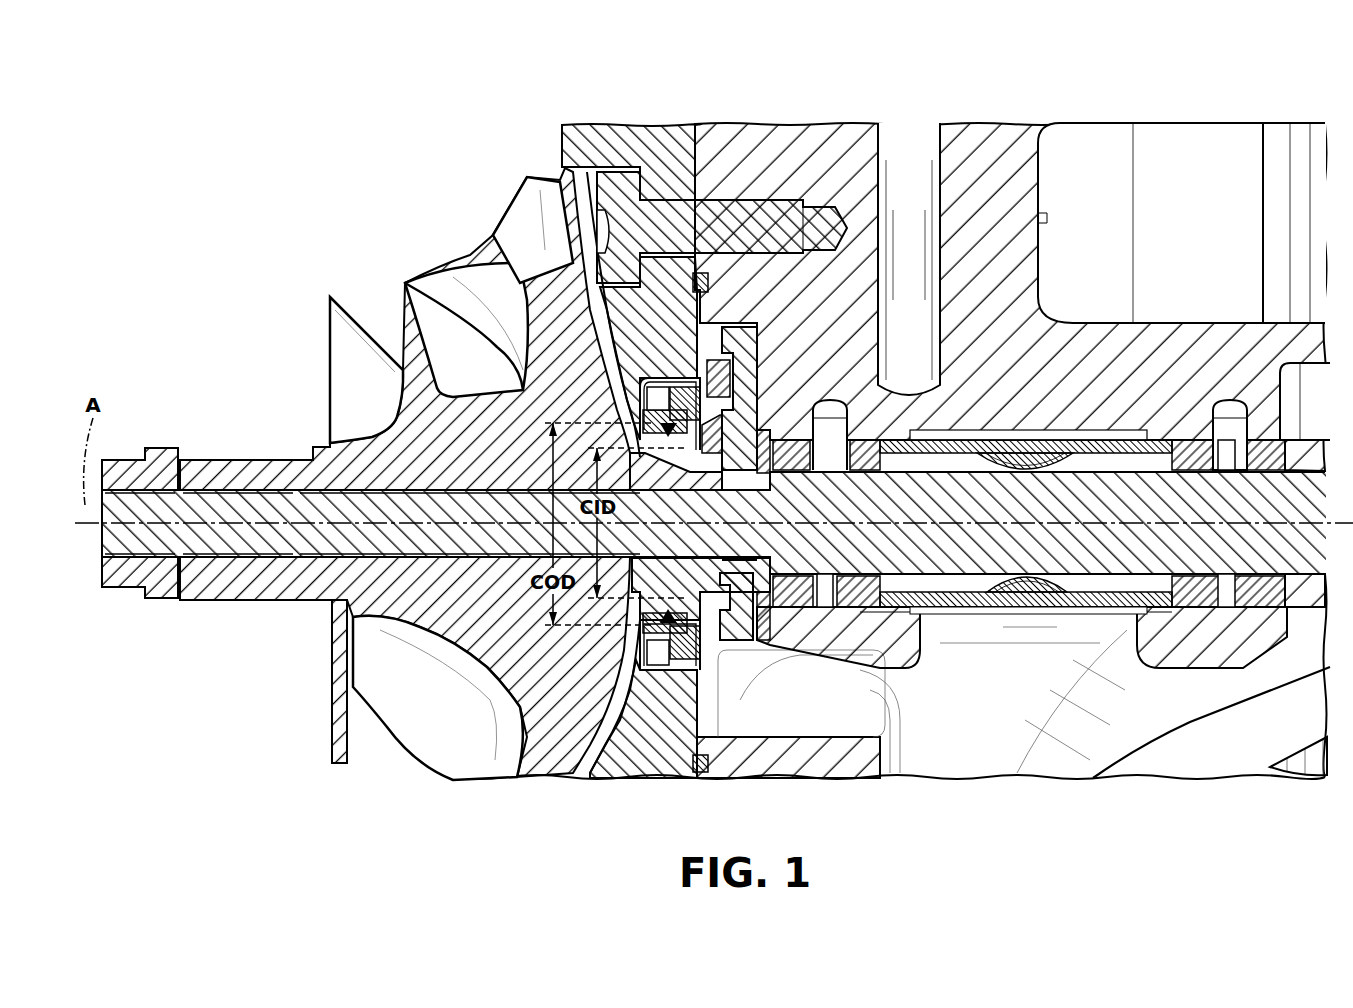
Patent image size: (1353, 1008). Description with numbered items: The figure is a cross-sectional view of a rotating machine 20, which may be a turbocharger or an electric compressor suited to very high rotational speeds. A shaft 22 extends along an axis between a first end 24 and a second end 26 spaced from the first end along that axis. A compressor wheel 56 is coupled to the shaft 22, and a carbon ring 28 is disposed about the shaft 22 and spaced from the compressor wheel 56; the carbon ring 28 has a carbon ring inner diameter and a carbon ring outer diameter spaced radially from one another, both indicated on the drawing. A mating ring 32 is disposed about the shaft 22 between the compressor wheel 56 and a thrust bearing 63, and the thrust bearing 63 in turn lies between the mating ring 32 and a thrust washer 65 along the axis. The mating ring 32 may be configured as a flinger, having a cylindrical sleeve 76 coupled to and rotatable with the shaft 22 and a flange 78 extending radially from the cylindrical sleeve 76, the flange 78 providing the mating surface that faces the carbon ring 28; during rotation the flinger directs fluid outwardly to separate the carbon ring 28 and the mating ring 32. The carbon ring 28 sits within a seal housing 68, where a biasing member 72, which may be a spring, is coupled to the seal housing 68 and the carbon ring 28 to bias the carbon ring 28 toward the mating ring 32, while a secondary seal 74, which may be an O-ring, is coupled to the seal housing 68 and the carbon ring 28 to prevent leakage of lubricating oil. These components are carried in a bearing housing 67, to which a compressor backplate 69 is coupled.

The rotating machine 20 is at (350, 170).
The shaft 22 is at (262, 537).
The first end 24 is at (203, 620).
The second end 26 is at (1227, 637).
The carbon ring 28 is at (703, 643).
The mating ring 32 is at (740, 640).
The compressor wheel 56 is at (500, 373).
The thrust bearing 63 is at (735, 325).
The thrust washer 65 is at (790, 612).
The bearing housing 67 is at (993, 143).
The seal housing 68 is at (668, 668).
The compressor backplate 69 is at (636, 135).
The biasing member 72 is at (650, 657).
The secondary seal 74 is at (612, 200).
The cylindrical sleeve 76 is at (727, 570).
The flange 78 is at (745, 640).